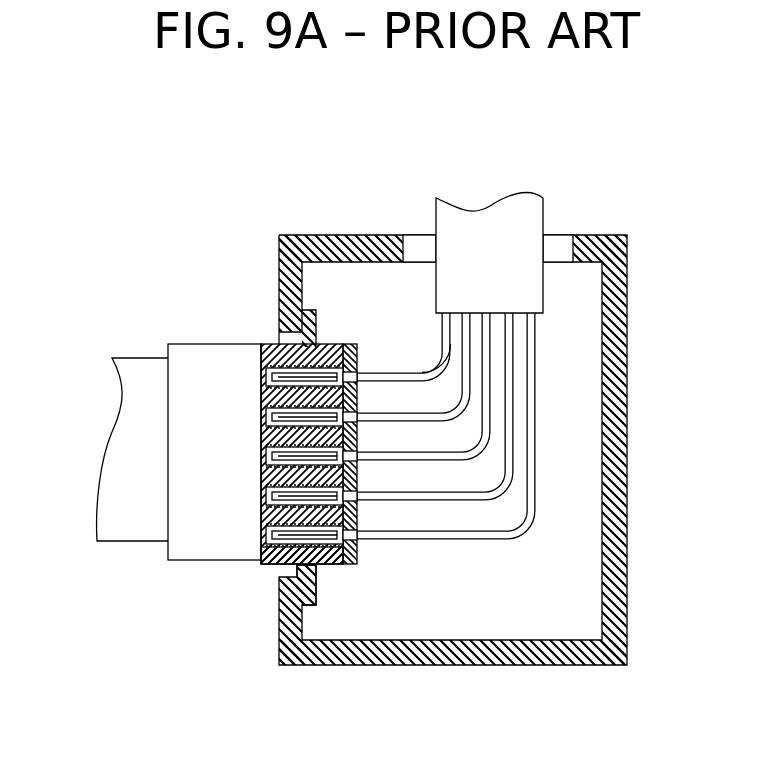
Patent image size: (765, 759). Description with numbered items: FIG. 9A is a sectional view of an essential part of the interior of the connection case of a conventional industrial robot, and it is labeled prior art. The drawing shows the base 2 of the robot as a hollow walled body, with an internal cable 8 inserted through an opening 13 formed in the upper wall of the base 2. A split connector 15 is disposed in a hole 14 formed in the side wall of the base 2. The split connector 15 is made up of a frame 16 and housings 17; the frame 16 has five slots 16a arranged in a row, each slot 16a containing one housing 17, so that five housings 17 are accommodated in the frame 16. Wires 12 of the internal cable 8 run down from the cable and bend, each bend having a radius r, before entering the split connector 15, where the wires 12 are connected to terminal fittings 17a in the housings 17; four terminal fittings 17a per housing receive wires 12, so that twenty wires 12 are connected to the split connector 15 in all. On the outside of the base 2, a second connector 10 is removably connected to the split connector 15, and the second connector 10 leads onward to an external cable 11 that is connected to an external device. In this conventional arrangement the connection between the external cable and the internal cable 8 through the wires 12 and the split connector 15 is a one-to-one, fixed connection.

The base 2 is at (597, 235).
The internal cable 8 is at (497, 218).
The second connector 10 is at (187, 547).
The cable 11 is at (117, 533).
The wires 12 is at (533, 513).
The opening 13 is at (423, 243).
The hole 14 is at (290, 598).
The split connector 15 is at (350, 548).
The frame 16 is at (322, 343).
The slots 16a is at (261, 373).
The housing 17 is at (268, 345).
The terminal fittings 17a is at (272, 562).
The wire bend radius r is at (438, 372).